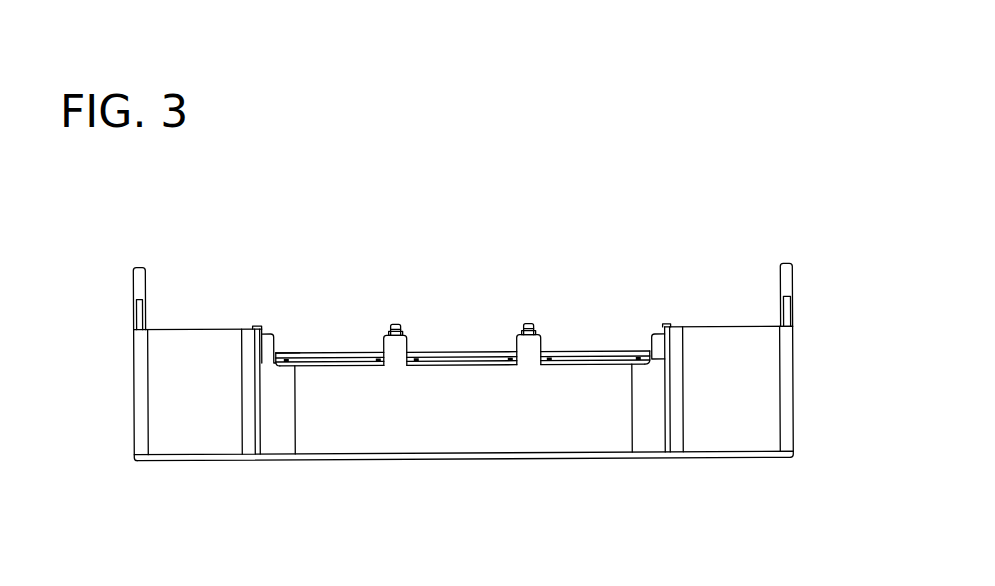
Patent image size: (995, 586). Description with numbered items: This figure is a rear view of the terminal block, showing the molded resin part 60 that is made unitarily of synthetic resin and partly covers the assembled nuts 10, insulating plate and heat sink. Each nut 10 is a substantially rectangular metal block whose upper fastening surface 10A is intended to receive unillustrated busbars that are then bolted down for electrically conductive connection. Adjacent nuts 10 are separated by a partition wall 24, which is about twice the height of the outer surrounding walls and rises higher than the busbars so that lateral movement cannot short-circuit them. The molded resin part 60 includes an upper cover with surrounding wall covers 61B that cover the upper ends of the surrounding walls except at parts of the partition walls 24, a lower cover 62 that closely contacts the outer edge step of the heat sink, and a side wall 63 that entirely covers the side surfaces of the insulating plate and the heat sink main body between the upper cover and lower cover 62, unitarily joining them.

The nut 10 is at (473, 350).
The upper fastening surface 10A is at (318, 352).
The partition wall 24 is at (396, 323).
The molded resin part 60 is at (808, 332).
The surrounding wall cover 61B is at (538, 347).
The lower cover 62 is at (405, 460).
The side wall 63 is at (560, 433).